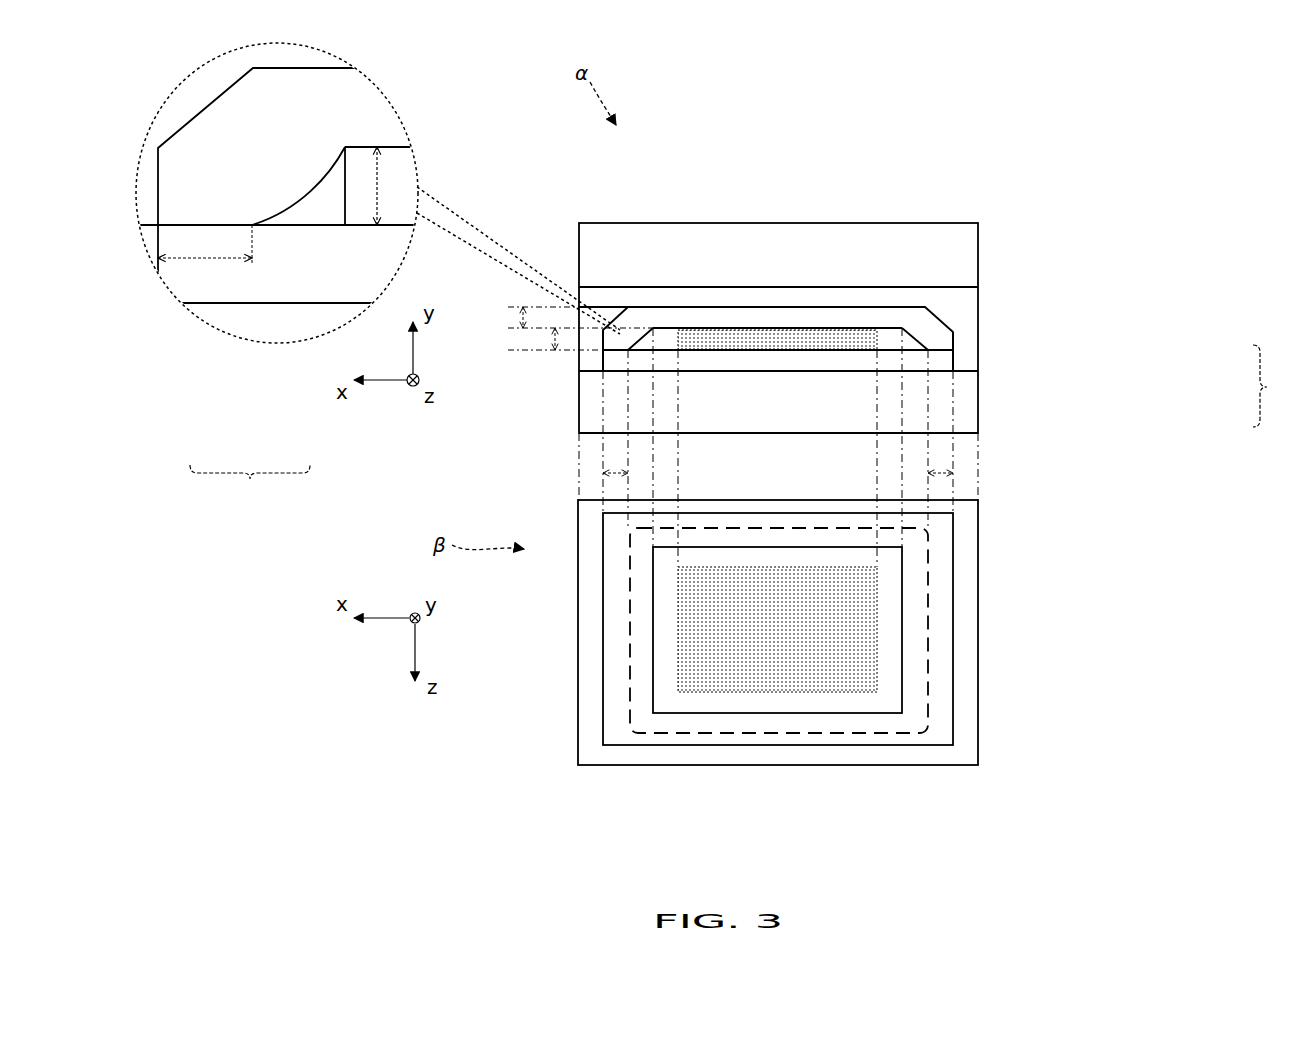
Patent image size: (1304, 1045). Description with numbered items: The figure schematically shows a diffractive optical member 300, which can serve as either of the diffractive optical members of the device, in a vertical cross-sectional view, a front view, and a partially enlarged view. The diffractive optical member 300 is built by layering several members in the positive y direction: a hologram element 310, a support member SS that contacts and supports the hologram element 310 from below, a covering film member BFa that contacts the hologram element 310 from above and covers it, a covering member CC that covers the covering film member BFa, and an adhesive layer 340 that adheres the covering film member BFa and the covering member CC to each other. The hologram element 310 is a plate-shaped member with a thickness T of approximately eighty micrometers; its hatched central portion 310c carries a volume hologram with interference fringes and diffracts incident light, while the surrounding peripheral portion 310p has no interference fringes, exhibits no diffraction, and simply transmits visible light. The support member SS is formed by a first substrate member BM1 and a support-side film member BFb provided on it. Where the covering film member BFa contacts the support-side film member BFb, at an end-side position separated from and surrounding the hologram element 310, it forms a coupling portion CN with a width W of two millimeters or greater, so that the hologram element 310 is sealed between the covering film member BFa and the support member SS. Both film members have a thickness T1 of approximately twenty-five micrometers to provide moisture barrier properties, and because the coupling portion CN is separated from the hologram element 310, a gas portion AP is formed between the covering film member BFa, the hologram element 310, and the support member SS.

The diffractive optical member 300 is at (994, 206).
The adhesive layer 340 is at (200, 97).
The hologram element 310 is at (393, 165).
The peripheral portion 310p is at (665, 342).
The central portion 310c is at (757, 353).
The covering member CC is at (952, 260).
The covering film member BFa is at (367, 117).
The support-side film member BFb is at (280, 280).
The first substrate member BM1 is at (237, 320).
The coupling portion CN is at (192, 227).
The gas portion AP is at (293, 207).
The support member SS is at (968, 603).
The thickness T is at (457, 249).
The thickness T1 is at (574, 328).
The width W is at (554, 350).